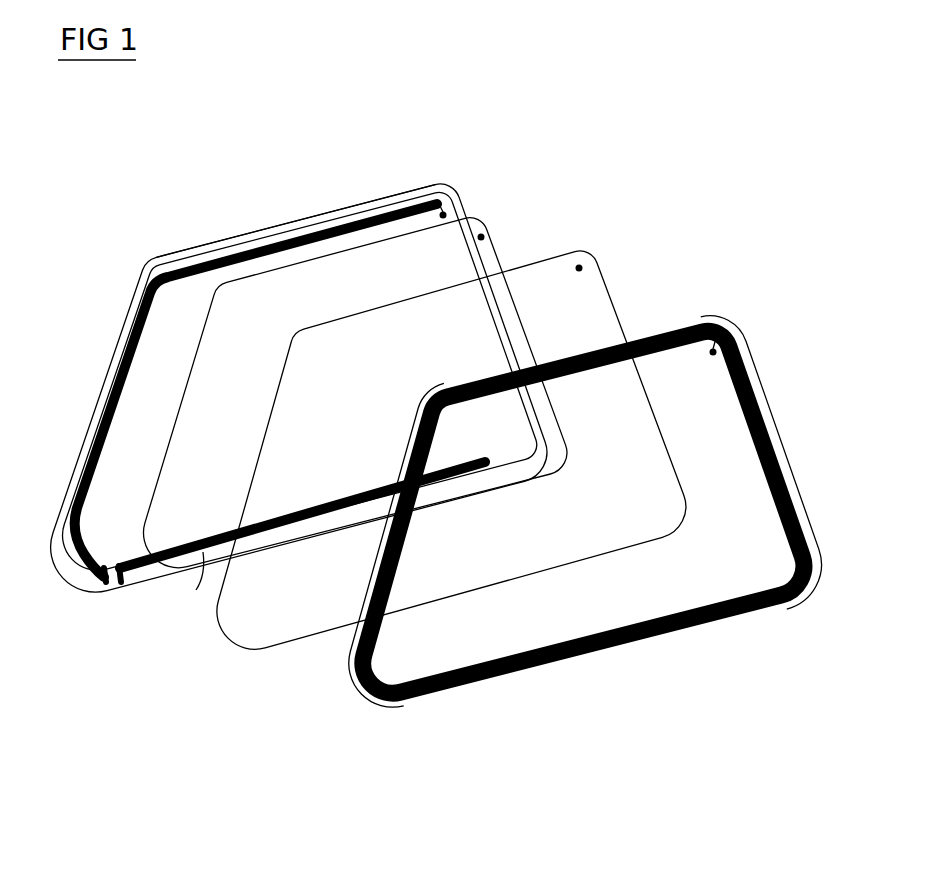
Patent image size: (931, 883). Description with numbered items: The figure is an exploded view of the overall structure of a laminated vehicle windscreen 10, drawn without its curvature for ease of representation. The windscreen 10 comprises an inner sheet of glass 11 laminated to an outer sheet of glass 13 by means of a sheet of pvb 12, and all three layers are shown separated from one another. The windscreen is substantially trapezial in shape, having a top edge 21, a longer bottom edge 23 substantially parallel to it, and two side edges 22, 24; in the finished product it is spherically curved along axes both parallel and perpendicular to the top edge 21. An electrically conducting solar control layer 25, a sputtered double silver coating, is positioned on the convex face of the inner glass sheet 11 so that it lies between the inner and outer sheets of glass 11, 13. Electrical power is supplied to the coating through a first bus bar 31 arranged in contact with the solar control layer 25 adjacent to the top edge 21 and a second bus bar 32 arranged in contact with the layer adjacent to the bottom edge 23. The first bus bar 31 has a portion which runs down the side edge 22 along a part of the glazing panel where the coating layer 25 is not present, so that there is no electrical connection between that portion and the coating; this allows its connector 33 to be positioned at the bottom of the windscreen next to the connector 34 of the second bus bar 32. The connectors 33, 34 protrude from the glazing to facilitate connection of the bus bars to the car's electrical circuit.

The windscreen 10 is at (104, 733).
The inner sheet of glass 11 is at (444, 212).
The sheet of pvb 12 is at (580, 266).
The outer sheet of glass 13 is at (730, 316).
The top edge 21 is at (300, 217).
The side edge 22 is at (107, 372).
The bottom edge 23 is at (597, 654).
The side edge 24 is at (775, 423).
The solar control layer 25 is at (482, 237).
The first bus bar 31 is at (228, 252).
The second bus bar 32 is at (302, 541).
The connector 33 is at (105, 584).
The connector 34 is at (121, 584).